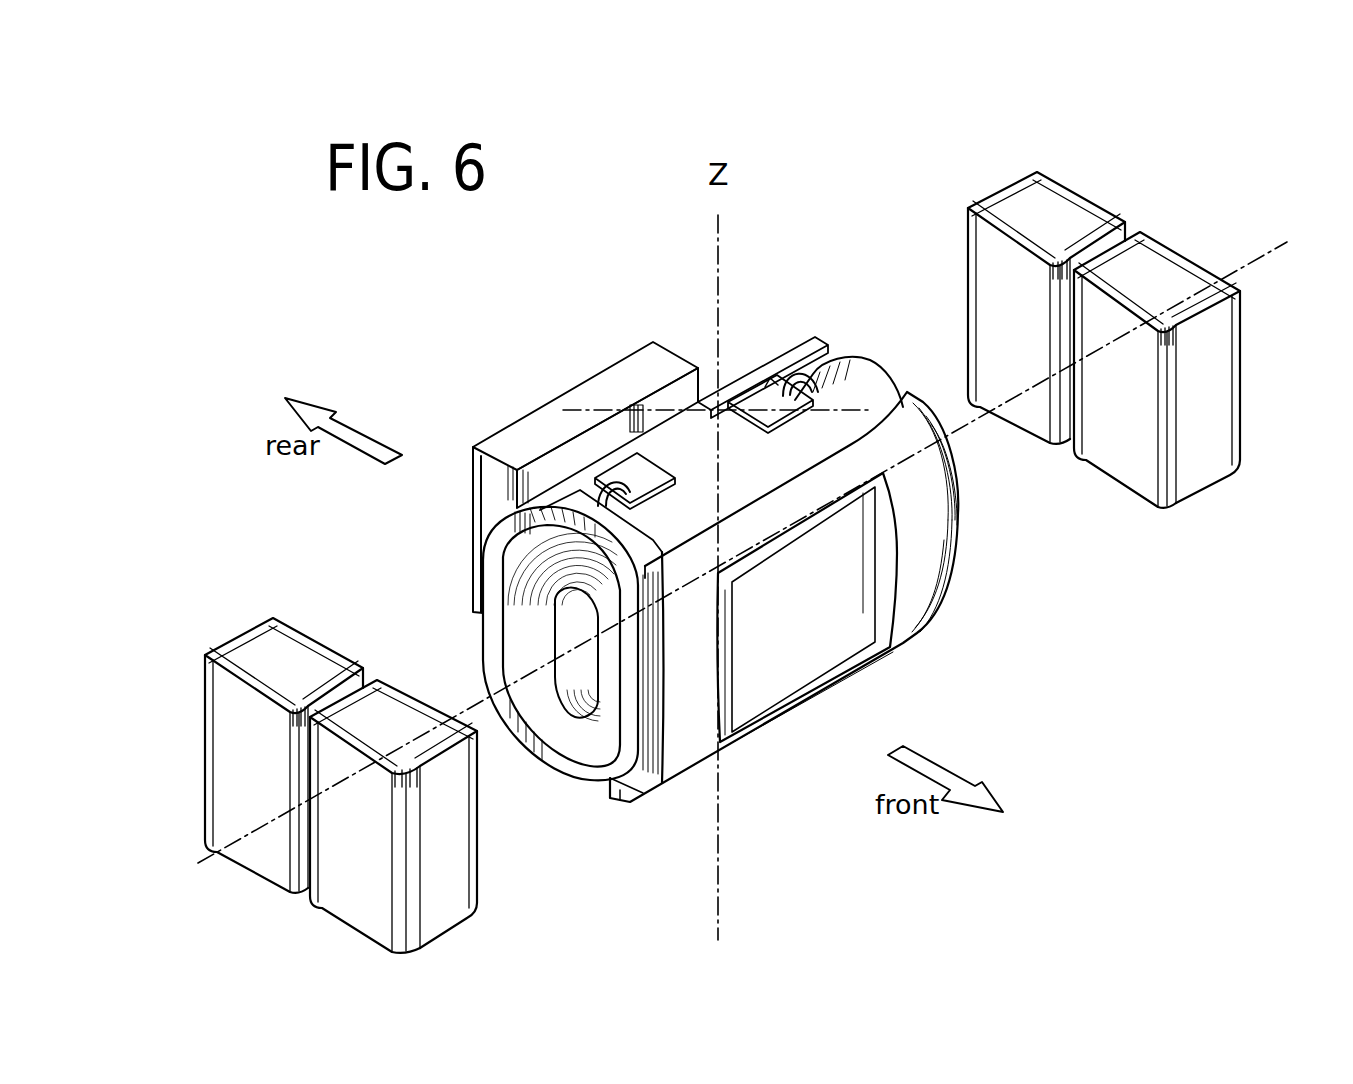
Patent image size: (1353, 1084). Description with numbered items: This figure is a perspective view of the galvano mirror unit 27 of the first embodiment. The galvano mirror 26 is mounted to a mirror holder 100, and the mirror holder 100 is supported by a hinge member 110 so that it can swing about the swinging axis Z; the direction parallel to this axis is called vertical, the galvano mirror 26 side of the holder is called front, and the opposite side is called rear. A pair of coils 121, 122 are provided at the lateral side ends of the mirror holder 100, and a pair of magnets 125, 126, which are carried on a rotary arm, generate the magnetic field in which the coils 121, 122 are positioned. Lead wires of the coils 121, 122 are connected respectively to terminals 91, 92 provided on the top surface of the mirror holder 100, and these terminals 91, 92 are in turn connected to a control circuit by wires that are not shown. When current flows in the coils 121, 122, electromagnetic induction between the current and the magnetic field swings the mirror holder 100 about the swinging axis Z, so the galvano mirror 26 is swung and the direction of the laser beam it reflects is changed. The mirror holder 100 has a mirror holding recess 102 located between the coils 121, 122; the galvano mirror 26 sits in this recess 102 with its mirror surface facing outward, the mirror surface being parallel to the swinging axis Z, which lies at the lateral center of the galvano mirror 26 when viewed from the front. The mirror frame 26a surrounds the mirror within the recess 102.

The galvano mirror unit 27 is at (792, 288).
The hinge member 110 is at (605, 387).
The mirror holder 100 is at (1028, 473).
The mirror holding recess 102 is at (882, 560).
The galvano mirror 26 is at (787, 586).
The lens frame 26a is at (767, 683).
The terminal 91 is at (767, 398).
The terminal 92 is at (640, 480).
The coil 121 is at (860, 380).
The coil 122 is at (578, 755).
The magnet 125 is at (1030, 193).
The magnet 126 is at (270, 643).